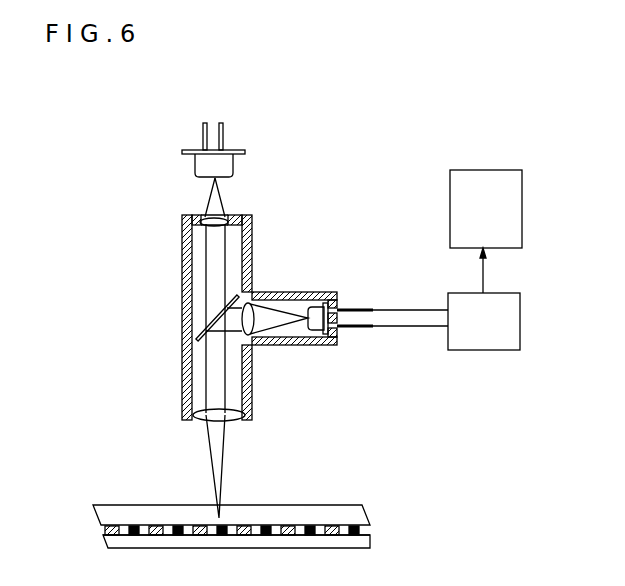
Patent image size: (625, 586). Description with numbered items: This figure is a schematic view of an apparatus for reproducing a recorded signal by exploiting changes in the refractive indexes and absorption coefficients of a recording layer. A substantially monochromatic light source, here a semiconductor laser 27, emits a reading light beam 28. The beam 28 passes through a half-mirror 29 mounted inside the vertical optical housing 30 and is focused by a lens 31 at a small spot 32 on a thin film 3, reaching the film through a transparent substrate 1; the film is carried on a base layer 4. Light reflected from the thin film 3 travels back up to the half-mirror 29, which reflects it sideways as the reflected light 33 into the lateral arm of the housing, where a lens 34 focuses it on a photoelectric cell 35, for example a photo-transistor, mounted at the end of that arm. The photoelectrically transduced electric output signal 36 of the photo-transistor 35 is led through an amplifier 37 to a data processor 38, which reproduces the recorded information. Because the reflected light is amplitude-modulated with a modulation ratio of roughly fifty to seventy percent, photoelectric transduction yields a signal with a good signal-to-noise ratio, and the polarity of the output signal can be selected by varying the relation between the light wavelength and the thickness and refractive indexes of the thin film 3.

The transparent substrate 1 is at (358, 515).
The thin film 3 is at (365, 529).
The base plate 4 is at (363, 542).
The semiconductor laser 27 is at (220, 165).
The reading light beam 28 is at (220, 200).
The half-mirror 29 is at (240, 300).
The housing 30 is at (220, 397).
The lens 31 is at (232, 415).
The light spot 32 is at (230, 518).
The reflected light 33 is at (280, 345).
The lens 34 is at (256, 303).
The photoelectric cell 35 is at (338, 303).
The electric output signal 36 is at (415, 327).
The amplifier 37 is at (498, 338).
The data processor 38 is at (505, 210).